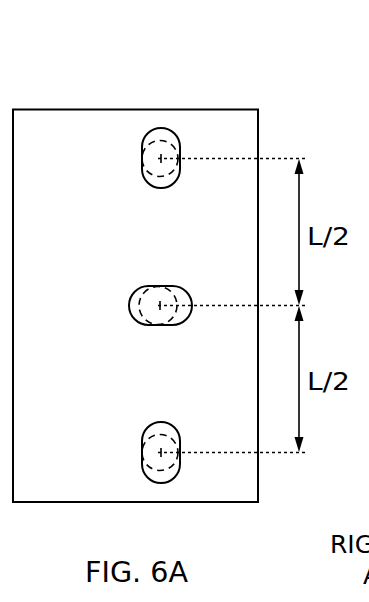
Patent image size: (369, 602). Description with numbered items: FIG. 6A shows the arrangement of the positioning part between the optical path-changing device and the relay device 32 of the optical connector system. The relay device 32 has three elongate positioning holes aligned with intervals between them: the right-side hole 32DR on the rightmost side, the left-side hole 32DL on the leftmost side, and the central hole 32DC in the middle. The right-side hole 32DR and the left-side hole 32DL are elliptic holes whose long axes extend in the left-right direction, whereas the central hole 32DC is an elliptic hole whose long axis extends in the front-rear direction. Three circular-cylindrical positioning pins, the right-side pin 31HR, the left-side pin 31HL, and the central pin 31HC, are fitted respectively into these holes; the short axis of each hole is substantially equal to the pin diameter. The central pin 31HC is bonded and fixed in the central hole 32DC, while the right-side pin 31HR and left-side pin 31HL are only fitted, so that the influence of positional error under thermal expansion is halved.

The relay device 32 is at (50, 109).
The right-side pin 31HR is at (155, 138).
The central pin 31HC is at (131, 296).
The left-side pin 31HL is at (150, 428).
The right-side hole 32DR is at (169, 128).
The central hole 32DC is at (179, 286).
The left-side hole 32DL is at (167, 422).